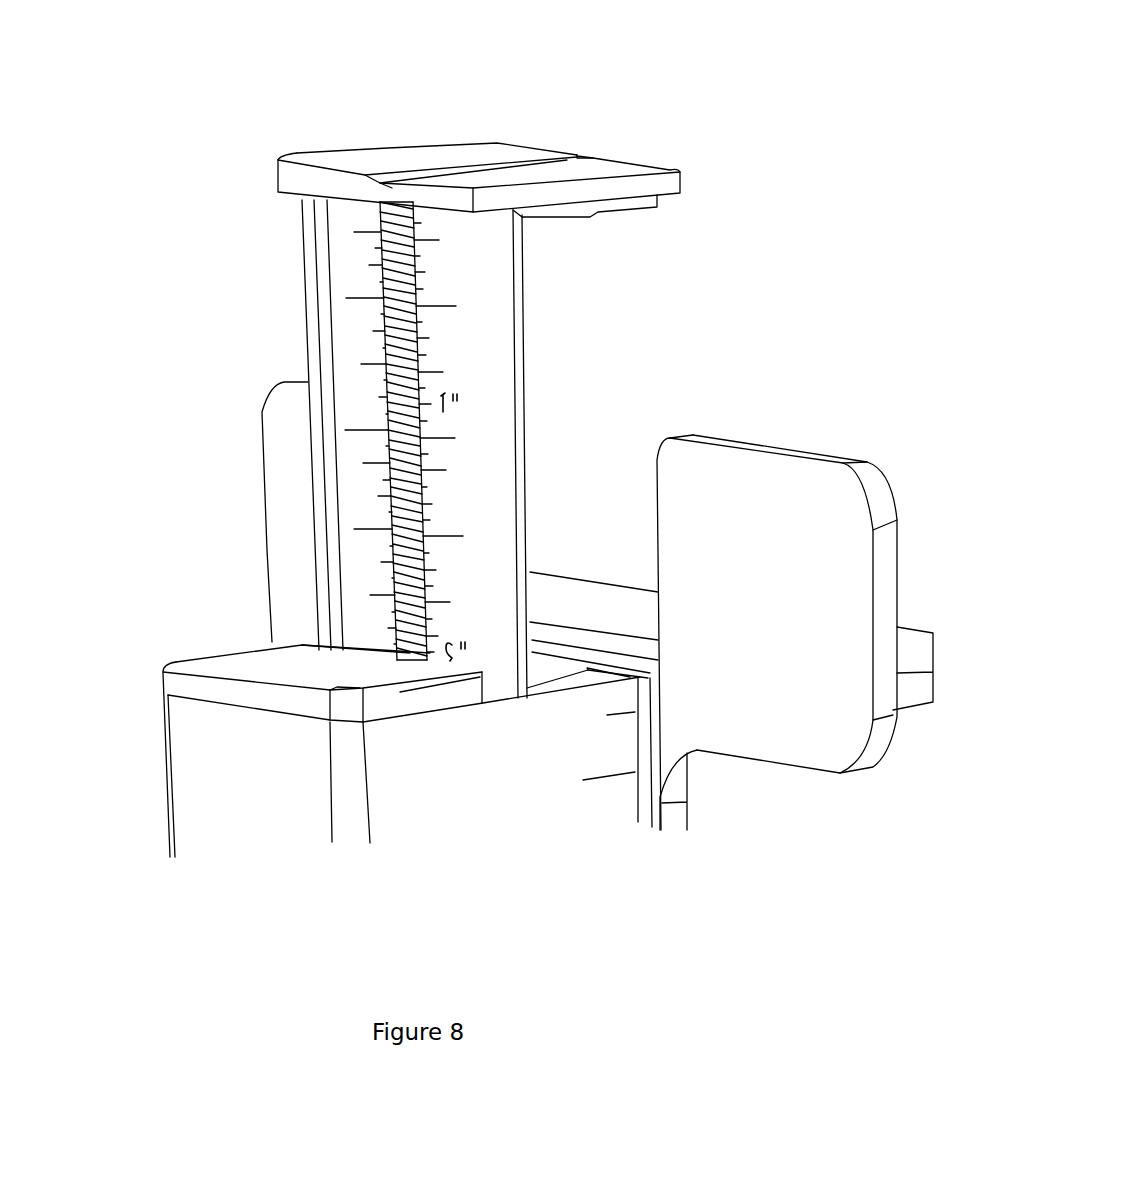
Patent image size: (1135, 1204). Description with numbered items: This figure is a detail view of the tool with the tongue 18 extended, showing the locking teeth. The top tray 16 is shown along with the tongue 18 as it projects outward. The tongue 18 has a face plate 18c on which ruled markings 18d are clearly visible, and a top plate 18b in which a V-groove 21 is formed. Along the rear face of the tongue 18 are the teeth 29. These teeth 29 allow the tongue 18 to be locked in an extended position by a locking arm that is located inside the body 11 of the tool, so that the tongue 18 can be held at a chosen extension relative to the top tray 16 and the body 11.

The body 11 is at (163, 797).
The top tray 16 is at (246, 465).
The tongue 18 is at (604, 113).
The top plate 18b is at (419, 146).
The face plate 18c is at (303, 337).
The ruled markings 18d is at (343, 465).
The V-groove 21 is at (538, 162).
The teeth 29 is at (409, 535).